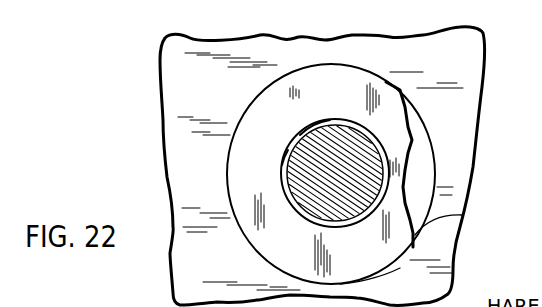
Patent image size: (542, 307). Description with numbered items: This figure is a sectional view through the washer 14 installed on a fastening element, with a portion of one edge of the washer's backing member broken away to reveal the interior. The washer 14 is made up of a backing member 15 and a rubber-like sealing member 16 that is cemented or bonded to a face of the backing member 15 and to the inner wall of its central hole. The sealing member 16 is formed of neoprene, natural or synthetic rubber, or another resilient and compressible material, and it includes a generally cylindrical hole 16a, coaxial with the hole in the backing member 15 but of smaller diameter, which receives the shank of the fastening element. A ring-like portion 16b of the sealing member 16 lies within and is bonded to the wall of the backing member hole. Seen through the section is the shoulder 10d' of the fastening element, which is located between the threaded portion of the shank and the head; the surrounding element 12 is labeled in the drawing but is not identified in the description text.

The body 12 is at (471, 84).
The washer 14 is at (458, 222).
The backing member 15 is at (387, 258).
The sealing member 16 is at (421, 158).
The hole 16a is at (298, 136).
The ring-like portion 16b is at (285, 168).
The shoulder 10d' is at (335, 158).